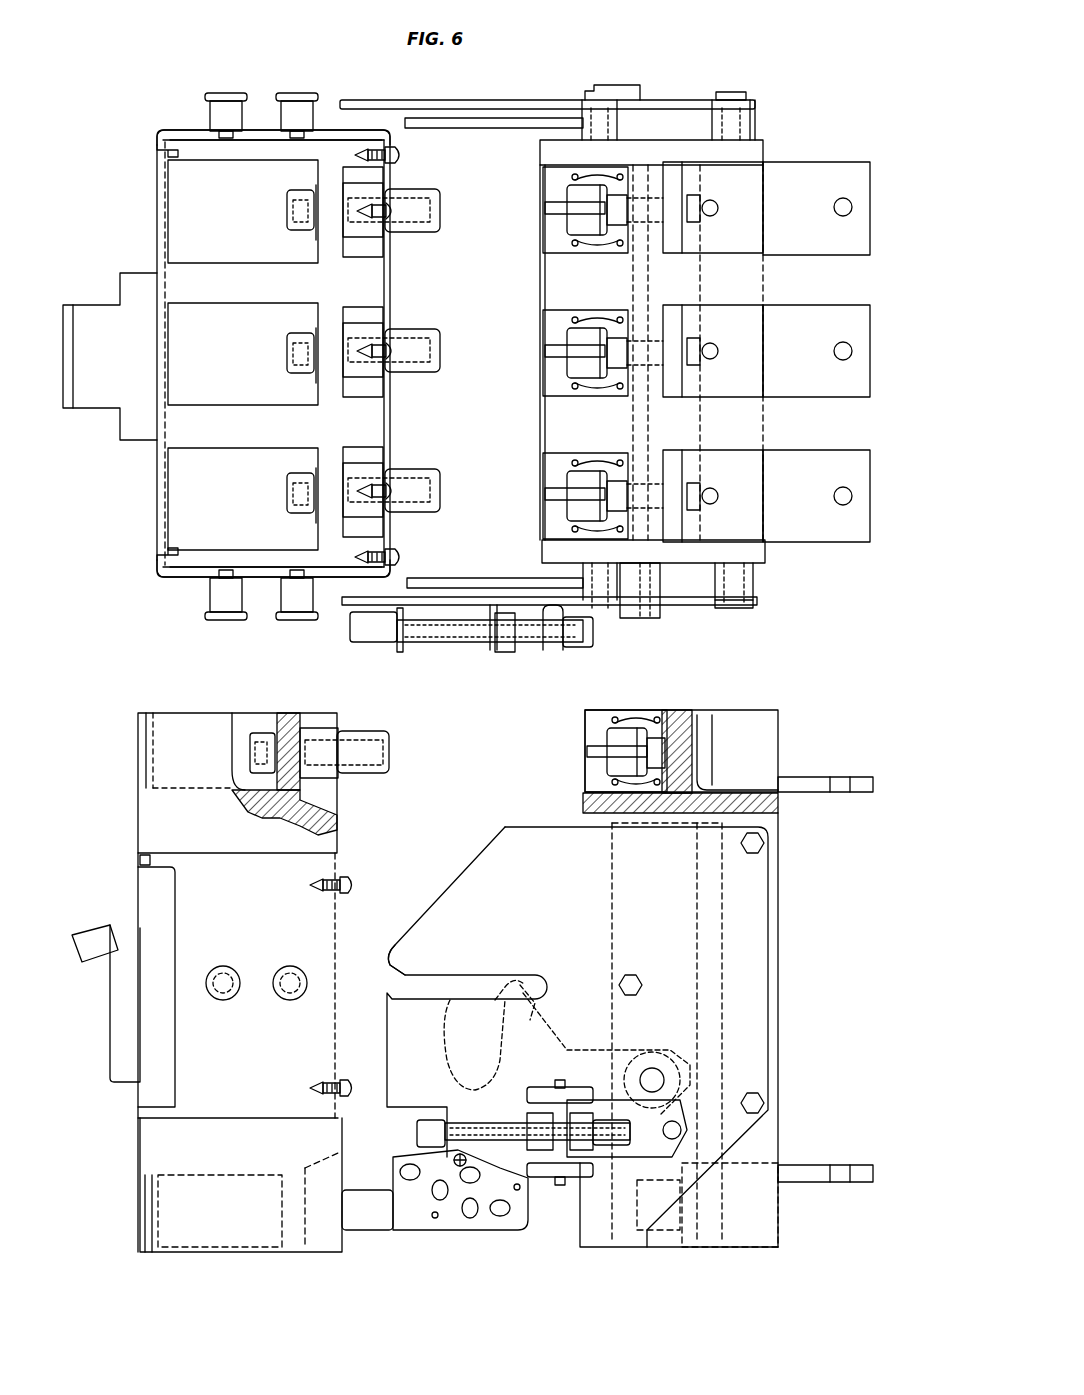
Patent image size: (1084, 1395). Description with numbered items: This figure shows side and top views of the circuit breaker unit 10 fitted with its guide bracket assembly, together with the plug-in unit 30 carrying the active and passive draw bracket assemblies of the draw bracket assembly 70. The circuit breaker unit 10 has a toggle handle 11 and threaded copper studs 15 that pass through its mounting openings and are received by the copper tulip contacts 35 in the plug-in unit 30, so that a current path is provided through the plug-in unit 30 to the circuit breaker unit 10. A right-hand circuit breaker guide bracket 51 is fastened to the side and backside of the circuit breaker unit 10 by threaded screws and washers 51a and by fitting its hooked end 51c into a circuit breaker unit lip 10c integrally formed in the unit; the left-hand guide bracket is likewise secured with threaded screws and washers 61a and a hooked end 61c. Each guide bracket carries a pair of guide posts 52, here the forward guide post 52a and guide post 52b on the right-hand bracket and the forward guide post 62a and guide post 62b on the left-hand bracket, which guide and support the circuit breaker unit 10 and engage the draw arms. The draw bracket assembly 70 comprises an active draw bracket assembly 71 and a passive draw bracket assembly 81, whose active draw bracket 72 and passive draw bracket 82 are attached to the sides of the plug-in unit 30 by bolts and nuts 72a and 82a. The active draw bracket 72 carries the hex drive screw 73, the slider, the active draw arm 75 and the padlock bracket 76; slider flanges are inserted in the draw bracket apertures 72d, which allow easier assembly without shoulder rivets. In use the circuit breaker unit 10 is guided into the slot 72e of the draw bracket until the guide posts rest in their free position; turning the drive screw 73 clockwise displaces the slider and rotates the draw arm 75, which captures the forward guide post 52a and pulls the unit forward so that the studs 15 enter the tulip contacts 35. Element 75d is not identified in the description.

The circuit breaker unit 10 is at (398, 282).
The circuit breaker unit lip 10c is at (156, 150).
The toggle handle 11 is at (65, 305).
The threaded copper stud 15 is at (440, 211).
The plug-in unit 30 is at (740, 710).
The tulip contact 35 is at (570, 200).
The right-hand circuit breaker guide bracket 51 is at (228, 858).
The threaded screws and washers 51a is at (403, 557).
The hooked end 51c is at (185, 578).
The guide posts 52 is at (280, 970).
The forward guide post 52a is at (297, 622).
The guide post 52b is at (227, 622).
The threaded screws and washers 61a is at (403, 155).
The hooked end 61c is at (185, 132).
The forward guide post 62a is at (300, 96).
The guide post 62b is at (228, 96).
The draw bracket assembly 70 is at (508, 820).
The active draw bracket assembly 71 is at (770, 596).
The active draw bracket 72 is at (350, 618).
The bolts and nuts 72a is at (605, 610).
The draw bracket apertures 72d is at (575, 1088).
The draw bracket slot aperture 72e is at (405, 970).
The drive screw 73 is at (445, 643).
The active draw arm 75 is at (548, 1000).
The link pivot 75d is at (503, 983).
The padlock bracket 76 is at (458, 1230).
The passive draw bracket assembly 81 is at (432, 84).
The passive draw bracket 82 is at (515, 100).
The bolts and nuts 82a is at (594, 90).